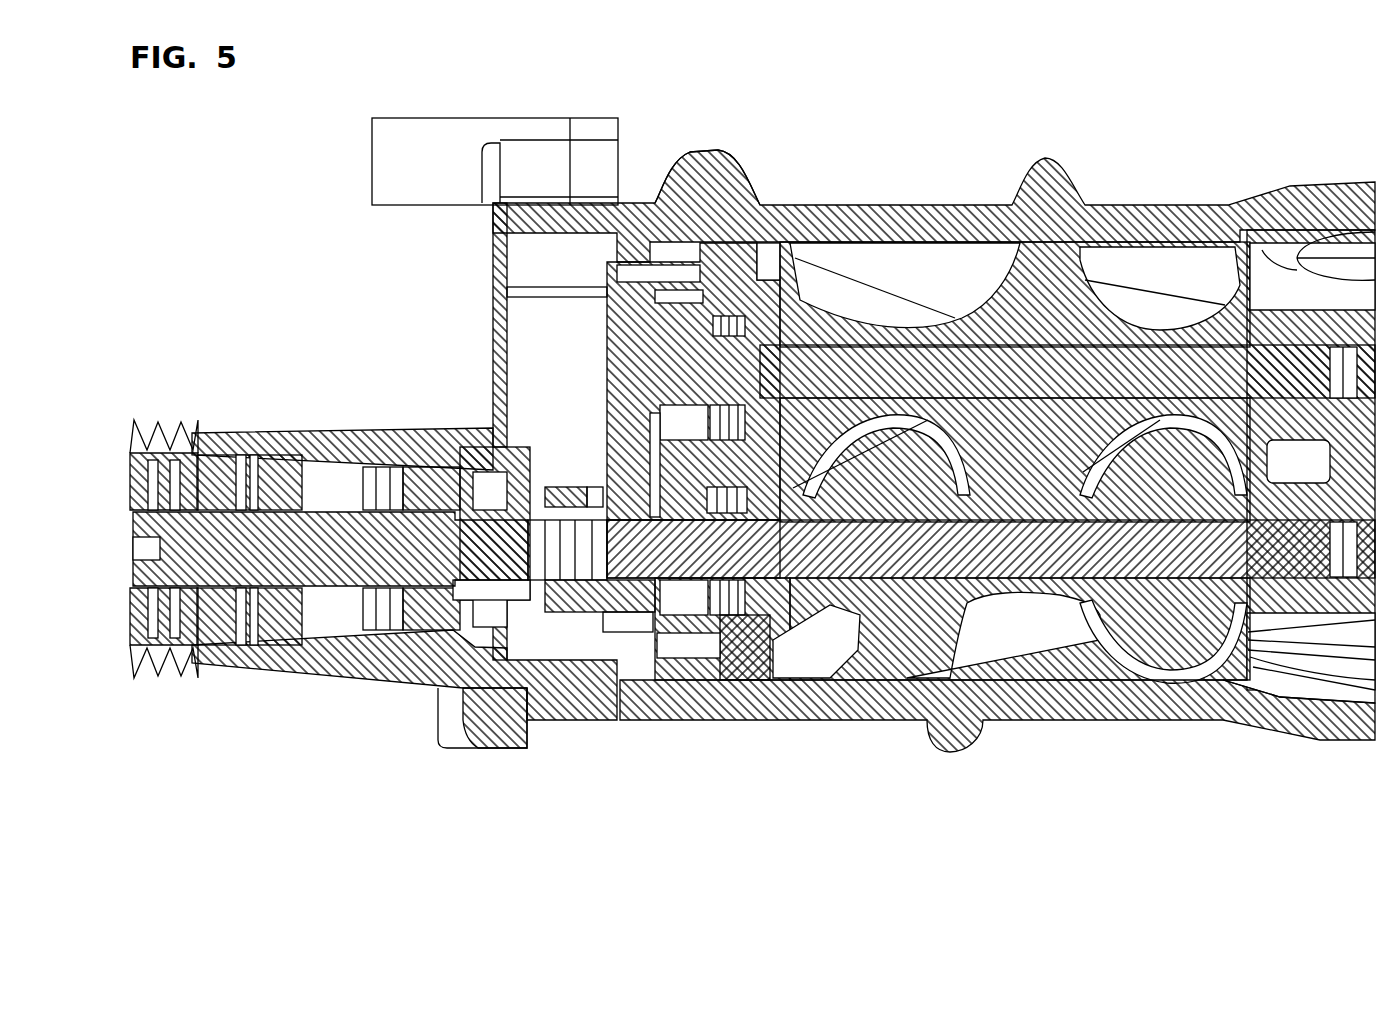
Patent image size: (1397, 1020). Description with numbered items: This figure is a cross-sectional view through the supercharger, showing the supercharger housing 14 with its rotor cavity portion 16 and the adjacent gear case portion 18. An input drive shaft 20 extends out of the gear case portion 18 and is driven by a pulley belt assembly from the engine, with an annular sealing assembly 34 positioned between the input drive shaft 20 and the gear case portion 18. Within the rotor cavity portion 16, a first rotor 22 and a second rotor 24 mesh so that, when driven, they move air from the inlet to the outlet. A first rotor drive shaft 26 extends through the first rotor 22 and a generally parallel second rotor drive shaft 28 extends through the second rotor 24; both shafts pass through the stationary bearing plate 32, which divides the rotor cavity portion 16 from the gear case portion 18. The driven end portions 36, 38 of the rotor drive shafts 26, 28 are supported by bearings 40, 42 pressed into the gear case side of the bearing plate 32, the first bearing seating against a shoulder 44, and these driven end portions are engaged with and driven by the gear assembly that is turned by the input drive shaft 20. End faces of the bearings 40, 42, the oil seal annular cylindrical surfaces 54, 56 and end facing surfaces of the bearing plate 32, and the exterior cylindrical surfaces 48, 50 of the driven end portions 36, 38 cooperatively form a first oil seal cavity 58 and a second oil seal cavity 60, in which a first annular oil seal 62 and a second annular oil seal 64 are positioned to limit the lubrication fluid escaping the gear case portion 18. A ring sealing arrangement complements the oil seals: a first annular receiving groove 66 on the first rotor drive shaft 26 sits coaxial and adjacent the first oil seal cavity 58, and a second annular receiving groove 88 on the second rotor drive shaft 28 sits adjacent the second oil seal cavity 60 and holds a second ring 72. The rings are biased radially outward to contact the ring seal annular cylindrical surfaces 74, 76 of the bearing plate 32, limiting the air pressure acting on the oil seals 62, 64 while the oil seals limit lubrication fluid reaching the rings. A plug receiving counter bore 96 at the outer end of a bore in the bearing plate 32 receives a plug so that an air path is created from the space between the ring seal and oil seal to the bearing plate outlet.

The supercharger housing 14 is at (707, 148).
The rotor cavity portion 16 is at (949, 238).
The gear case portion 18 is at (543, 433).
The input drive shaft 20 is at (268, 555).
The first rotor 22 is at (912, 487).
The second rotor 24 is at (1040, 312).
The first rotor drive shaft 26 is at (1042, 560).
The second rotor drive shaft 28 is at (1041, 387).
The bearing plate 32 is at (750, 652).
The annular sealing assembly 34 is at (212, 625).
The driven end portion of the first rotor drive shaft 36 is at (697, 560).
The driven end portion of the second rotor drive shaft 38 is at (726, 385).
The bearing 40 is at (694, 609).
The bearing 42 is at (696, 438).
The shoulder 44 is at (688, 647).
The exterior cylindrical surface 48 is at (722, 592).
The exterior cylindrical surface 50 is at (715, 326).
The oil seal annular cylindrical surface 54 is at (612, 442).
The oil seal annular cylindrical surface 56 is at (731, 320).
The first oil seal cavity 58 is at (705, 468).
The second oil seal cavity 60 is at (758, 345).
The first annular oil seal 62 is at (768, 620).
The second annular oil seal 64 is at (718, 500).
The first annular receiving groove 66 is at (772, 592).
The second ring 72 is at (753, 407).
The ring seal annular cylindrical surface 74 is at (703, 515).
The ring seal annular cylindrical surface 76 is at (788, 582).
The second annular receiving groove 88 is at (782, 300).
The plug receiving counter bore 96 is at (713, 320).